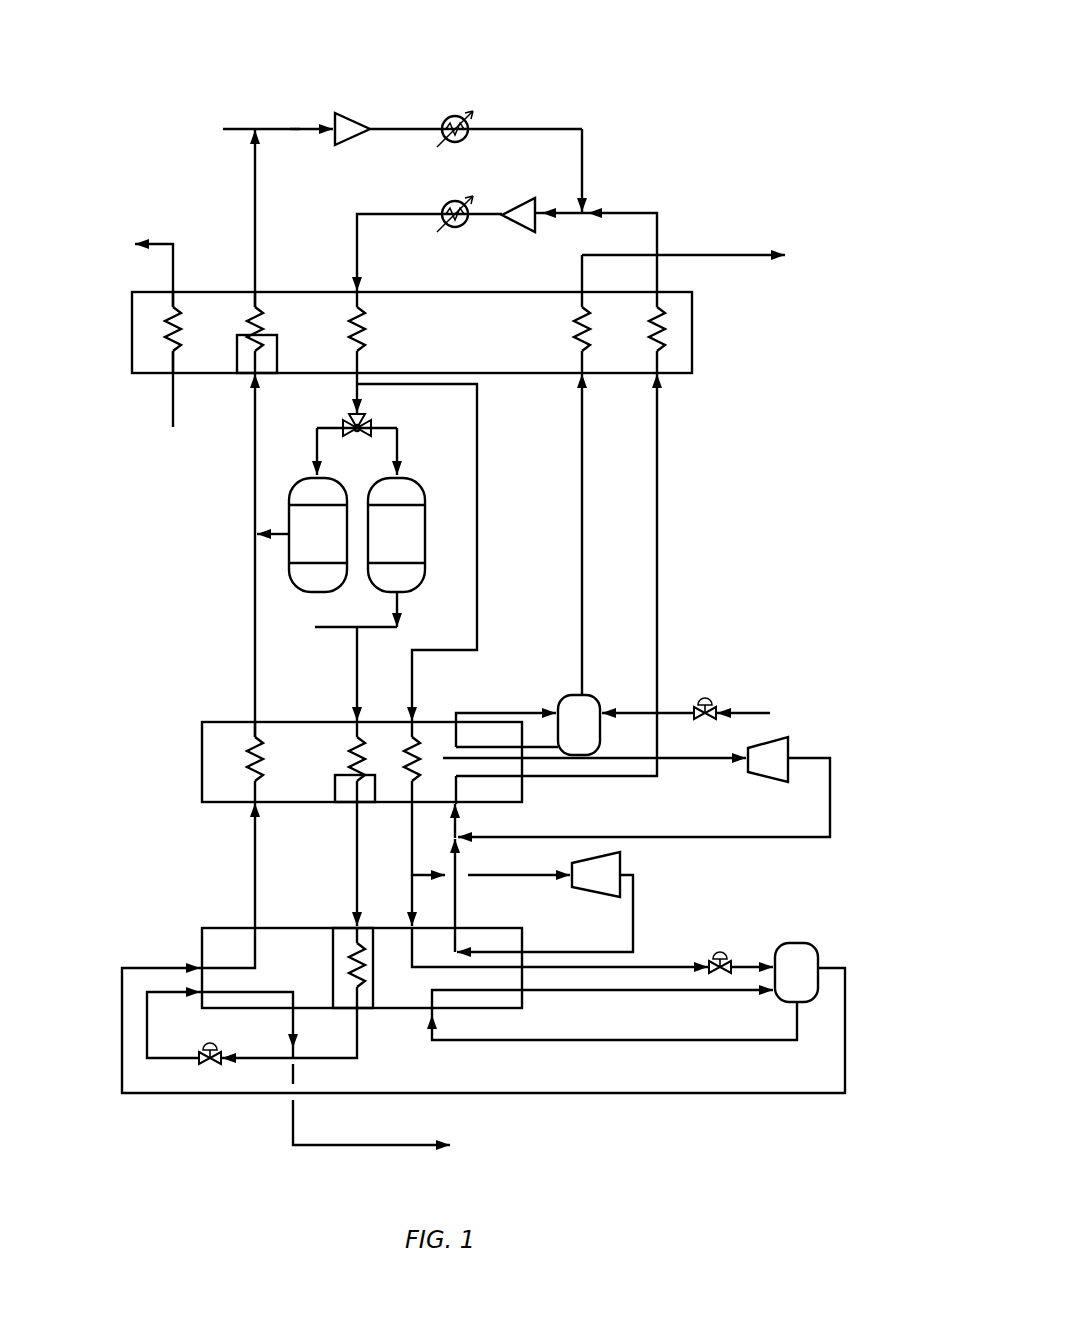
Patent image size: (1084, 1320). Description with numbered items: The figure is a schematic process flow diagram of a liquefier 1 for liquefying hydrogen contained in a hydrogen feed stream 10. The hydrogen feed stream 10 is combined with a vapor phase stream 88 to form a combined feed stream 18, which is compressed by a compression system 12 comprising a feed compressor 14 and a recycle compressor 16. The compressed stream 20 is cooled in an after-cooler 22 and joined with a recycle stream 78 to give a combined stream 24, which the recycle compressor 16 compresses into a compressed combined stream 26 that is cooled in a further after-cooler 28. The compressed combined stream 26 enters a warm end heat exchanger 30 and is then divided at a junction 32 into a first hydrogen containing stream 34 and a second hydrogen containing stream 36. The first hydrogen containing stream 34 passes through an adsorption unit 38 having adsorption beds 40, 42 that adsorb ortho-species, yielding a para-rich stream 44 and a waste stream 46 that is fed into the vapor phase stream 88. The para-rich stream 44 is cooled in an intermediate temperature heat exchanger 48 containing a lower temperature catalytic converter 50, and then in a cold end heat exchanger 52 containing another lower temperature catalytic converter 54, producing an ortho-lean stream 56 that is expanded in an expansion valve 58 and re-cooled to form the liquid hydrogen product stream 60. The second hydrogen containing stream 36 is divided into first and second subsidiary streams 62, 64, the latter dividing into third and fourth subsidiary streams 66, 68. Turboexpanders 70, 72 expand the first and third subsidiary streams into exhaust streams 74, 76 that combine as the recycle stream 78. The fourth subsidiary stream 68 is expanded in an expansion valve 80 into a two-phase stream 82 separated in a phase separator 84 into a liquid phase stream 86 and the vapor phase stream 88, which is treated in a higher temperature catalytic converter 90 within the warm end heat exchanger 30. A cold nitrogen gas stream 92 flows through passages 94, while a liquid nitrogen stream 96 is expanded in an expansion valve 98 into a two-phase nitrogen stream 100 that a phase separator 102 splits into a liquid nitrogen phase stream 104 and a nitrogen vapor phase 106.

The liquefier 1 is at (790, 125).
The hydrogen feed stream 10 is at (240, 128).
The compression system 12 is at (580, 103).
The feed compressor 14 is at (338, 148).
The recycle compressor 16 is at (515, 232).
The combined feed stream 18 is at (298, 125).
The compressed stream 20 is at (371, 121).
The after-cooler 22 is at (465, 105).
The combined stream 24 is at (560, 228).
The compressed combined stream 26 is at (487, 205).
The after-cooler 28 is at (447, 203).
The warm end heat exchanger 30 is at (692, 345).
The junction 32 is at (352, 386).
The first hydrogen containing stream 34 is at (352, 412).
The second hydrogen containing stream 36 is at (480, 444).
The adsorption unit 38 is at (425, 436).
The adsorption bed 40 is at (300, 550).
The adsorption bed 42 is at (421, 545).
The para-rich stream 44 is at (355, 685).
The waste stream 46 is at (272, 433).
The intermediate temperature heat exchanger 48 is at (200, 745).
The lower temperature catalytic converter 50 is at (338, 800).
The cold end heat exchanger 52 is at (212, 938).
The lower temperature catalytic converter 54 is at (360, 1008).
The ortho-lean stream 56 is at (318, 1058).
The expansion valve 58 is at (216, 1050).
The liquid hydrogen product stream 60 is at (318, 1150).
The first subsidiary stream 62 is at (438, 864).
The second subsidiary stream 64 is at (408, 838).
The third subsidiary stream 66 is at (503, 878).
The fourth subsidiary stream 68 is at (408, 888).
The turboexpander 70 is at (777, 748).
The turboexpander 72 is at (622, 858).
The exhaust stream 74 is at (832, 790).
The exhaust stream 76 is at (636, 925).
The recycle stream 78 is at (660, 535).
The expansion valve 80 is at (725, 945).
The two-phase stream 82 is at (752, 965).
The phase separator 84 is at (805, 950).
The liquid phase stream 86 is at (700, 1047).
The vapor phase stream 88 is at (640, 1093).
The higher temperature catalytic converter 90 is at (247, 402).
The cold nitrogen gas stream 92 is at (172, 398).
The passages 94 is at (160, 336).
The liquid nitrogen stream 96 is at (752, 700).
The expansion valve 98 is at (707, 695).
The two-phase nitrogen stream 100 is at (637, 702).
The phase separator 102 is at (585, 712).
The liquid nitrogen phase stream 104 is at (481, 703).
The nitrogen vapor phase 106 is at (585, 520).